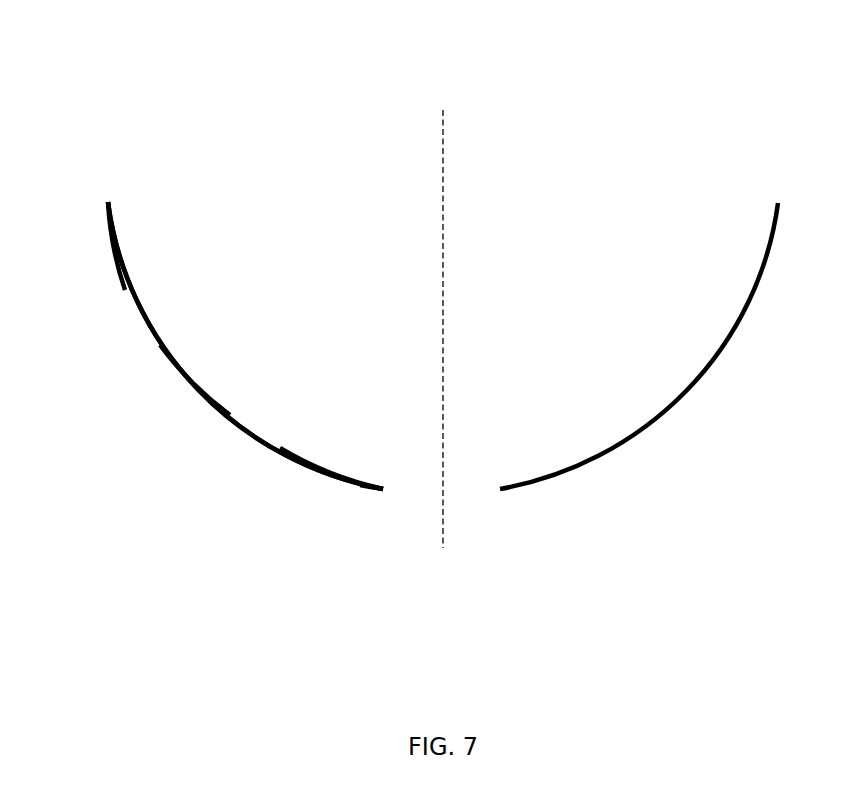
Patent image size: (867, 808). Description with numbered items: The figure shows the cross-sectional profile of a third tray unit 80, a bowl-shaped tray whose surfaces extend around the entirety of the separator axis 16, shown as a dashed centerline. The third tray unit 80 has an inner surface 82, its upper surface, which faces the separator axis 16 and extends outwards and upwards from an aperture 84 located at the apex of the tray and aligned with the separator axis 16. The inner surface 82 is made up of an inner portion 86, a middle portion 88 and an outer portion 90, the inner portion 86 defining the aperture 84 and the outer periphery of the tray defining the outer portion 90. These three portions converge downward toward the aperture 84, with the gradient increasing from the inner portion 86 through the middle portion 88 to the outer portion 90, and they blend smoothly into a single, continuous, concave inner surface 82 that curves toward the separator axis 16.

The third tray unit 80 is at (662, 146).
The separator axis 16 is at (443, 187).
The inner surface 82 is at (255, 343).
The aperture 84 is at (425, 498).
The inner portion 86 is at (318, 468).
The middle portion 88 is at (193, 387).
The outer portion 90 is at (113, 267).